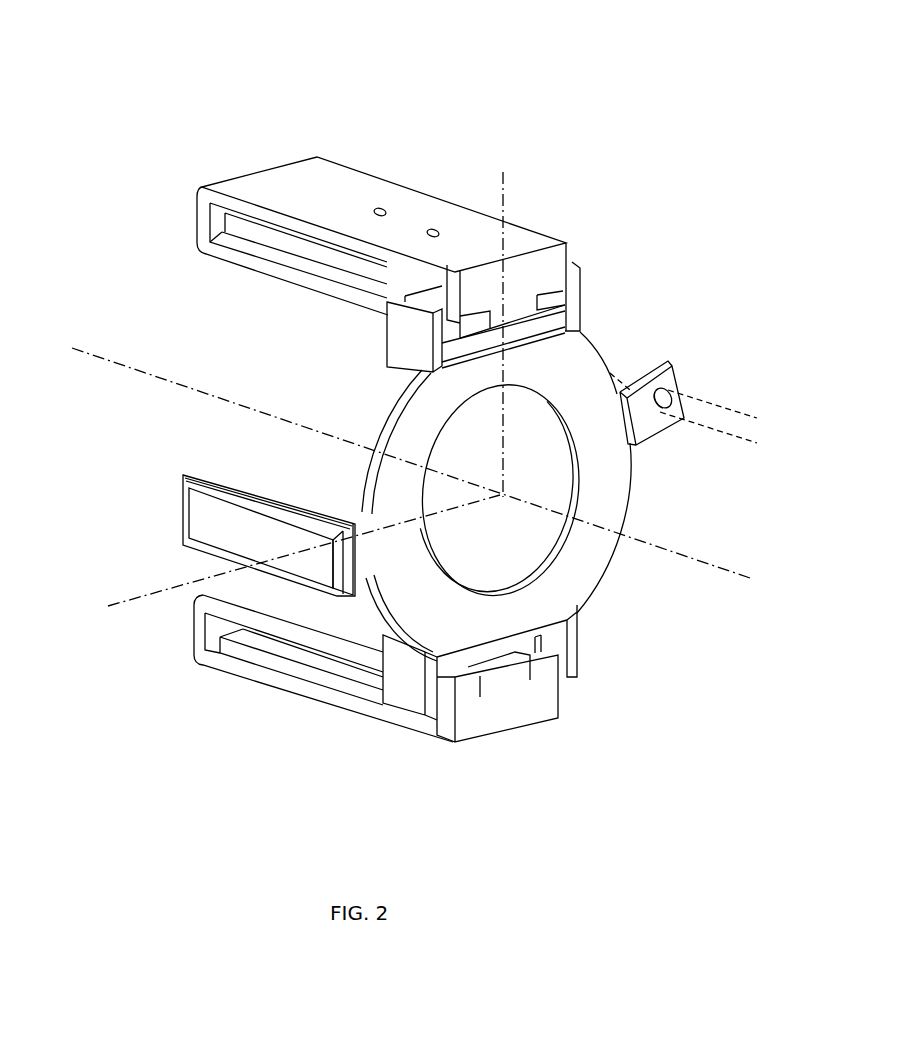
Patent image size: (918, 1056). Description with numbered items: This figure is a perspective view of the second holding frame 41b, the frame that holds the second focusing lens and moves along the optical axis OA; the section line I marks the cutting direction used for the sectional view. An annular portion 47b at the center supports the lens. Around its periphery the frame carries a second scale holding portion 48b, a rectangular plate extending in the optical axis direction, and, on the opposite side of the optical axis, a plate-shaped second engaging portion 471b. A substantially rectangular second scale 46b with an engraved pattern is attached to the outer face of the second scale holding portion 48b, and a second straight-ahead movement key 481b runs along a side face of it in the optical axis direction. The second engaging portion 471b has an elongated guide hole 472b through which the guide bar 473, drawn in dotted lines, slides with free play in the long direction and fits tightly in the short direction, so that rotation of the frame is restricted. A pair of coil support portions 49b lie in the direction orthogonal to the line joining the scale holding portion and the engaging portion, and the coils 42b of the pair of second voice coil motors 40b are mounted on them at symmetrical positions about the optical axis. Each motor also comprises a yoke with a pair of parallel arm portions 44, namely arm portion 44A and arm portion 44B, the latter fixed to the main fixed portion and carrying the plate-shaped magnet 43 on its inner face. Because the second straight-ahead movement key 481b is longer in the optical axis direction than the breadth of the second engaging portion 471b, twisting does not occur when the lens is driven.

The second voice coil motor 40b is at (367, 432).
The second holding frame 41b is at (449, 457).
The coil 42b is at (433, 298).
The magnet 43 is at (260, 230).
The arm portions 44 is at (384, 212).
The arm portion 44A is at (285, 273).
The arm portion 44B is at (348, 178).
The second scale 46b is at (197, 515).
The annular portion 47b is at (617, 495).
The second engaging portion 471b is at (647, 423).
The guide hole 472b is at (668, 392).
The guide bar 473 is at (727, 412).
The second scale holding portion 48b is at (229, 502).
The second straight-ahead movement key 481b is at (256, 467).
The coil support portion 49b is at (397, 355).
The optical axis OA is at (389, 459).
The section line I- I is at (299, 384).